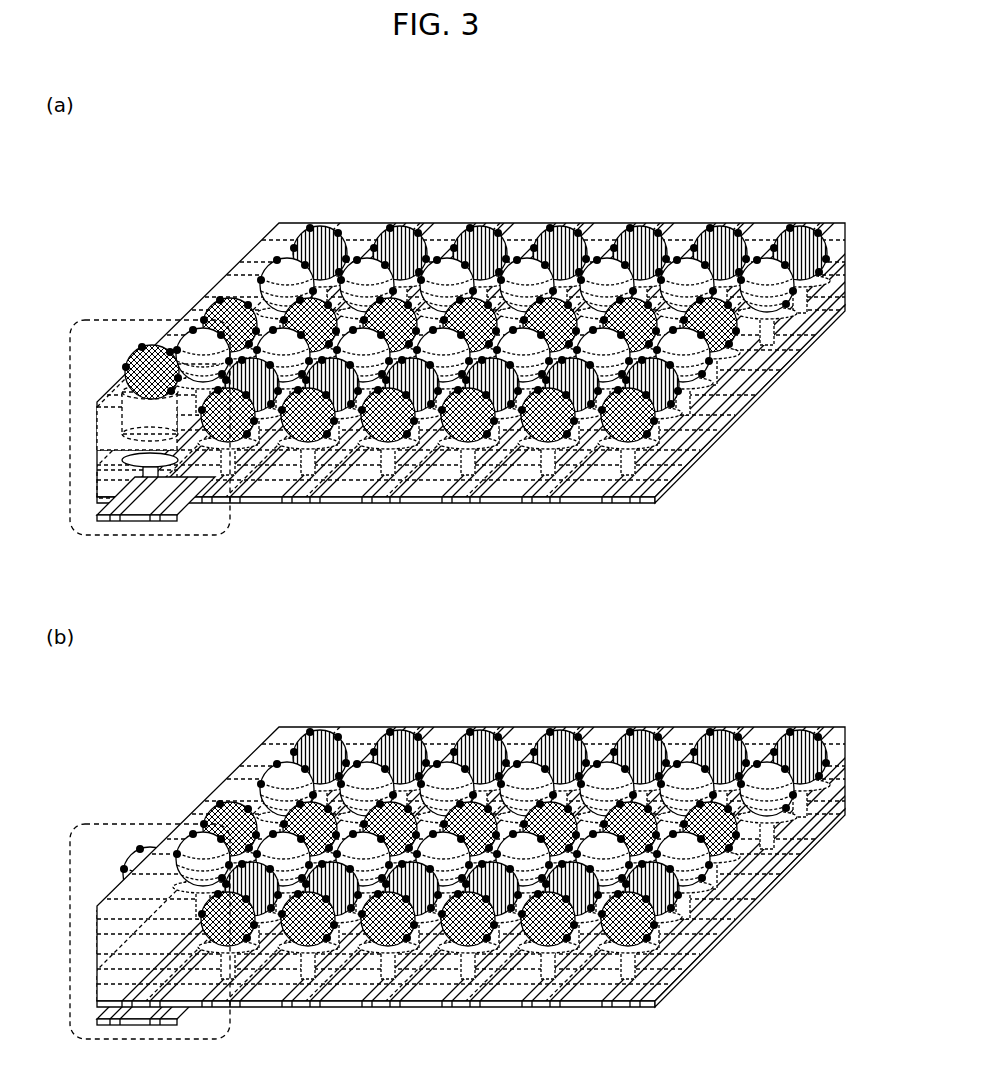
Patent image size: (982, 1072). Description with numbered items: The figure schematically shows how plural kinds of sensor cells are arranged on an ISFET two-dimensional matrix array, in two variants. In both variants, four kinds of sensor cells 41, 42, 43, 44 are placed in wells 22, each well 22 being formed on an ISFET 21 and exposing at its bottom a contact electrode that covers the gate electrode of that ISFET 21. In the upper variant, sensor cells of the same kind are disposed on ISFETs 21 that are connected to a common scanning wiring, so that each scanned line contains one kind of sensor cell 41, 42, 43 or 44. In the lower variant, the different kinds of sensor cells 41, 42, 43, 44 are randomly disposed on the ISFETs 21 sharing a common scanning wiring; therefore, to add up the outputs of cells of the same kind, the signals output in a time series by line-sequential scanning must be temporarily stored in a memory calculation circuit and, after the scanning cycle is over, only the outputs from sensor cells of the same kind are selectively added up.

The ISFET 21 is at (112, 492).
The well 22 is at (110, 412).
The sensor cell 41 is at (240, 322).
The sensor cell 42 is at (268, 298).
The sensor cell 43 is at (296, 262).
The sensor cell 44 is at (323, 228).